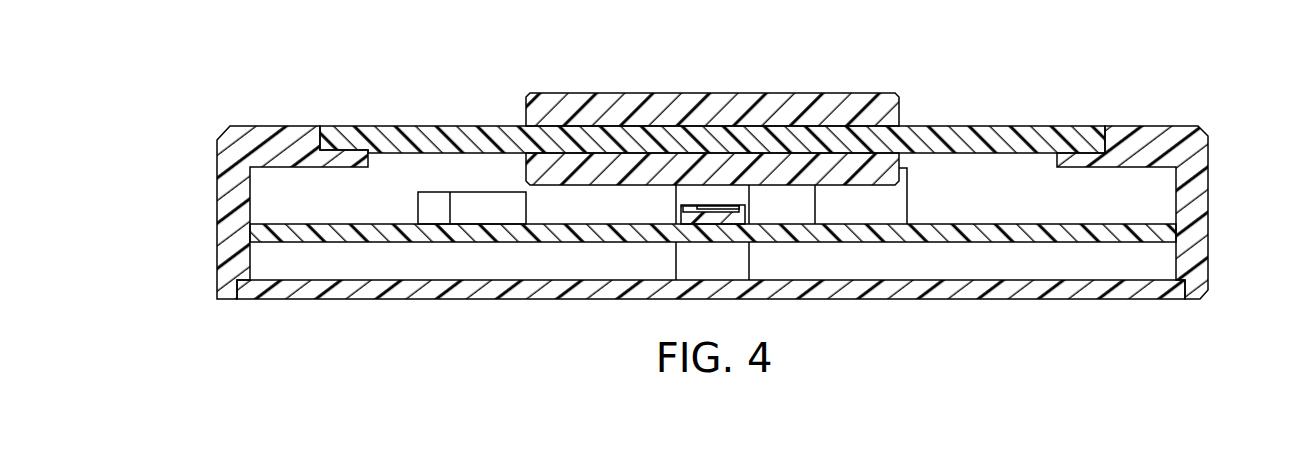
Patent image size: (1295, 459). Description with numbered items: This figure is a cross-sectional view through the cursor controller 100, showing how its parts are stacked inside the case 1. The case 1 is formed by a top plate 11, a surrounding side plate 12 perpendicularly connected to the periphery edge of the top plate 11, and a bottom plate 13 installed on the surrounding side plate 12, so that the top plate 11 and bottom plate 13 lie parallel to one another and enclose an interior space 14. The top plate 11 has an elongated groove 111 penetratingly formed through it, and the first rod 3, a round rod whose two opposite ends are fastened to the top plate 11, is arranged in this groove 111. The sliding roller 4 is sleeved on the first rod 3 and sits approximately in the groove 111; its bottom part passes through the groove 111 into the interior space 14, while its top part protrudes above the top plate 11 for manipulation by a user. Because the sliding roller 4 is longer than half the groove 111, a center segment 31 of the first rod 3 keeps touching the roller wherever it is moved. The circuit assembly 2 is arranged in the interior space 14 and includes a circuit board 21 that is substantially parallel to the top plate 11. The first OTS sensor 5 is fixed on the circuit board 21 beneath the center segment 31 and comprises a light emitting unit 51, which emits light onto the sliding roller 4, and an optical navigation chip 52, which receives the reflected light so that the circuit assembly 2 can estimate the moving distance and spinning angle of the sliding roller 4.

The cursor controller 100 is at (220, 52).
The case 1 is at (1196, 122).
The top plate 11 is at (1118, 140).
The groove 111 is at (317, 140).
The surrounding side plate 12 is at (1197, 213).
The bottom plate 13 is at (1105, 292).
The interior space 14 is at (1010, 178).
The circuit assembly 2 is at (1040, 222).
The circuit board 21 is at (957, 235).
The first rod 3 is at (444, 124).
The center segment 31 is at (722, 137).
The sliding roller 4 is at (842, 90).
The first OTS sensor 5 is at (703, 227).
The light emitting unit 51 is at (682, 207).
The optical navigation chip 52 is at (740, 208).